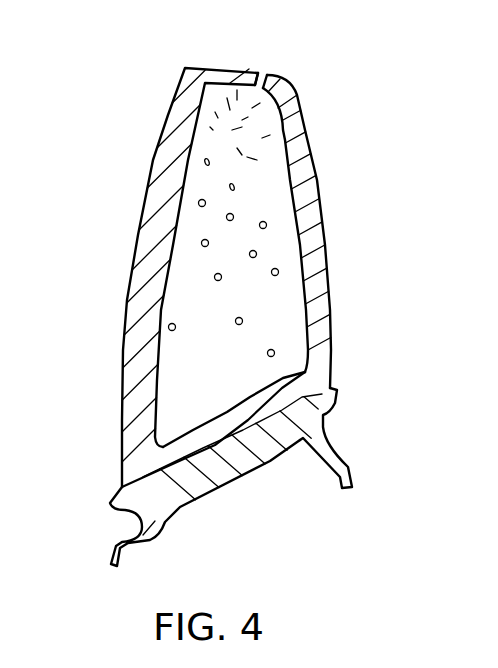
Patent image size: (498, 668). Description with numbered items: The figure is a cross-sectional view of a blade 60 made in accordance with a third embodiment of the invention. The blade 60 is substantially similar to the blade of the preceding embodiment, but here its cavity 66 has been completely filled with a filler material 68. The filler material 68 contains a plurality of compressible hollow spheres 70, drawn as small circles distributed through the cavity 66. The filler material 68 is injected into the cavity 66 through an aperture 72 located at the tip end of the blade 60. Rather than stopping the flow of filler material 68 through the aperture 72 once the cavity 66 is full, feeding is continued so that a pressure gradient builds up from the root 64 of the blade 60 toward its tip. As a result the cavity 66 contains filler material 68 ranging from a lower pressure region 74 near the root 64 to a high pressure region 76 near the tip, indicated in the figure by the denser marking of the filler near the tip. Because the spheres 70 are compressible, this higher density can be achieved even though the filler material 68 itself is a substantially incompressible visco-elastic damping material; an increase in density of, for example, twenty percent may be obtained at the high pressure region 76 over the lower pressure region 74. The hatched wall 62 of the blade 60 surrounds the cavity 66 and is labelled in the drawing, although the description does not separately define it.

The blade 60 is at (366, 181).
The right side wall 62 is at (320, 253).
The root 64 is at (338, 440).
The cavity 66 is at (298, 318).
The filler material 68 is at (173, 303).
The compressible hollow spheres 70 is at (271, 188).
The aperture 72 is at (268, 74).
The lower pressure region 74 is at (298, 353).
The high pressure region 76 is at (217, 108).